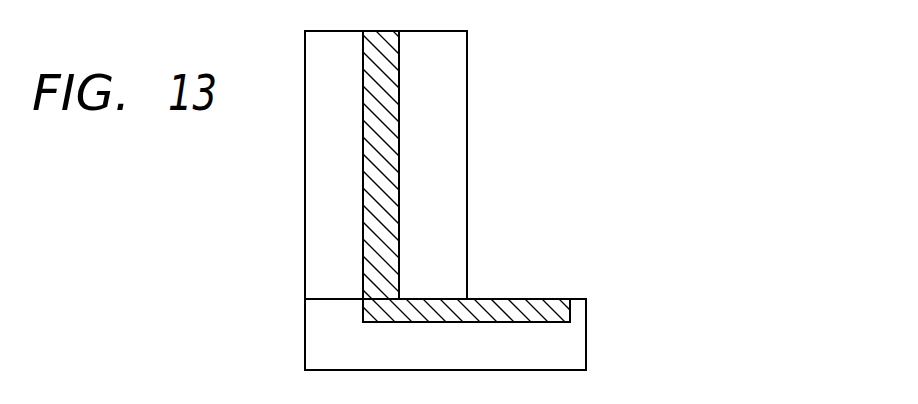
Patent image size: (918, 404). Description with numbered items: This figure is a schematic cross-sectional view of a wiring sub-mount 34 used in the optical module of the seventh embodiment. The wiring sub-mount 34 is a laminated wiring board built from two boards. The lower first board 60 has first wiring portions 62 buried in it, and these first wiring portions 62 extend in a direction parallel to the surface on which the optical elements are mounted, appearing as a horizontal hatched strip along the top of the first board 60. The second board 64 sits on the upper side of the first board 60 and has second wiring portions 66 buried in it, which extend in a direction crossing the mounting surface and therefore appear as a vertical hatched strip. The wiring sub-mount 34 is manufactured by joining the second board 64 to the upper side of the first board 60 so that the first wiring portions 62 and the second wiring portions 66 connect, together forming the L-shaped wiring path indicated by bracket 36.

The wiring sub-mount 34 is at (558, 125).
The L-shaped liner layer 36 is at (540, 173).
The first board 60 is at (578, 346).
The first wiring portions 62 is at (486, 301).
The second board 64 is at (456, 58).
The second wiring portions 66 is at (398, 195).